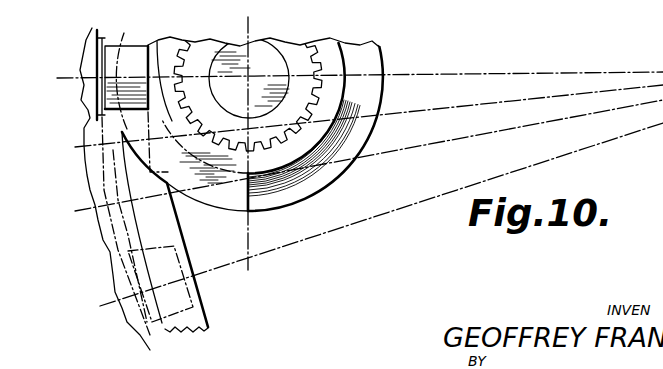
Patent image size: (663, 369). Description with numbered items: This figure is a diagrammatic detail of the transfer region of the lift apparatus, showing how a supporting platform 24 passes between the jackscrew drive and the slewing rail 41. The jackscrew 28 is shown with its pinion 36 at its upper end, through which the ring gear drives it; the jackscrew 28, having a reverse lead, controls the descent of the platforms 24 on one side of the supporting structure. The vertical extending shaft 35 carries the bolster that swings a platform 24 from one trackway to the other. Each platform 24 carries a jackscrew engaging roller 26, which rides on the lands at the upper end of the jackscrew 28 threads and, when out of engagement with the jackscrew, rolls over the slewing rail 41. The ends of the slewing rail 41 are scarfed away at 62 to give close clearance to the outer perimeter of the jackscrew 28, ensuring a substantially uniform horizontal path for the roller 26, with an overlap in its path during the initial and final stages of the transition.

The supporting platform 24 is at (92, 74).
The jackscrew engaging roller 26 is at (128, 53).
The vertical extending shaft 35 is at (258, 58).
The pinion 36 is at (303, 52).
The jackscrew 28 is at (352, 88).
The scarfed end of slewing rail 62 is at (208, 209).
The slewing rail 41 is at (178, 297).